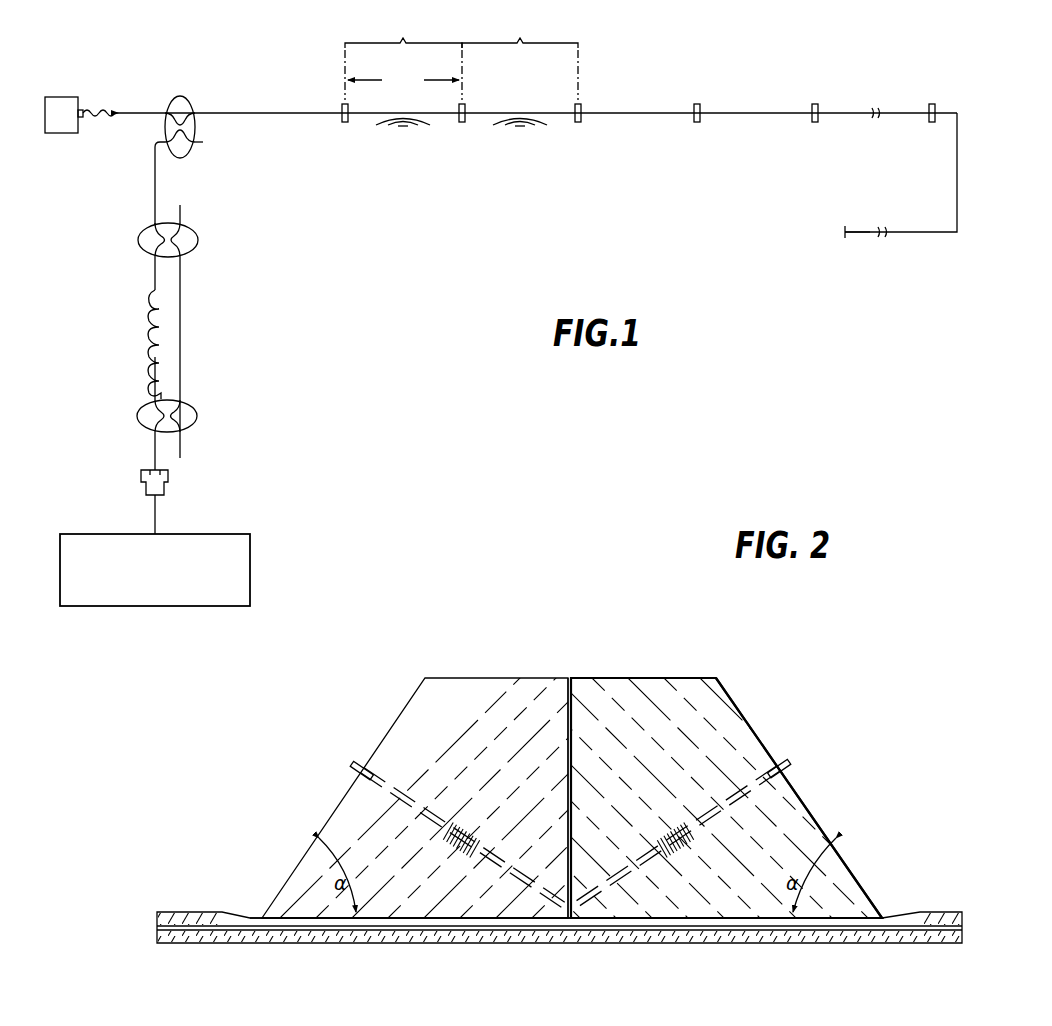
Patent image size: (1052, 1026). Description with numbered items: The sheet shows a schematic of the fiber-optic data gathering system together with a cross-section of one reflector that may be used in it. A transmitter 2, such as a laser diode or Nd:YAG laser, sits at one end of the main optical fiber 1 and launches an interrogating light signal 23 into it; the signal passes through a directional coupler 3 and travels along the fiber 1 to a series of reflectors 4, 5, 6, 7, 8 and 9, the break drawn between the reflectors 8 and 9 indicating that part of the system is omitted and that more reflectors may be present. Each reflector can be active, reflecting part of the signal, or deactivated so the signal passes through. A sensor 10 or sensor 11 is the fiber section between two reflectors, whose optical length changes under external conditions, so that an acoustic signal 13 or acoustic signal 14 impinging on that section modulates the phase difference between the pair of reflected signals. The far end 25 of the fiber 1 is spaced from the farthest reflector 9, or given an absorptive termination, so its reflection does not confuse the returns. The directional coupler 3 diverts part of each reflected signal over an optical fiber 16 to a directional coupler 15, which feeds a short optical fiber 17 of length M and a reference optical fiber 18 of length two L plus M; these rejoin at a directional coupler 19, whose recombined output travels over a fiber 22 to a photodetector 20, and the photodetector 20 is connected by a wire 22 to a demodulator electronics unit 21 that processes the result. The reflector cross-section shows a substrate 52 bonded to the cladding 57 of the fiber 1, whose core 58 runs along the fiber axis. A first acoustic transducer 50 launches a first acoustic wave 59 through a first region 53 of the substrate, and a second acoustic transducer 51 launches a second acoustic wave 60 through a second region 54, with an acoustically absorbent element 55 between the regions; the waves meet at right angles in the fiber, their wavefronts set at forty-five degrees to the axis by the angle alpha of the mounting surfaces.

In FIG. 1, the main optical fiber 1 is at (246, 110).
In FIG. 2, the main optical fiber 1 is at (906, 912).
In FIG. 1, the transmitter 2 is at (60, 135).
In FIG. 1, the directional coupler 3 is at (178, 96).
In FIG. 1, the reflector 4 is at (343, 102).
In FIG. 1, the reflector 5 is at (457, 123).
In FIG. 1, the reflector 6 is at (583, 122).
In FIG. 1, the reflector 7 is at (702, 122).
In FIG. 1, the reflector 8 is at (820, 122).
In FIG. 1, the reflector 9 is at (928, 122).
In FIG. 1, the sensor 10 is at (403, 58).
In FIG. 1, the sensor 11 is at (520, 58).
In FIG. 1, the acoustic signal 13 is at (376, 125).
In FIG. 1, the acoustic signal 14 is at (493, 125).
In FIG. 1, the directional coupler 15 is at (198, 240).
In FIG. 1, the optical fiber 16 is at (155, 180).
In FIG. 1, the short optical fiber 17 is at (180, 333).
In FIG. 1, the reference optical fiber 18 is at (155, 378).
In FIG. 1, the directional coupler 19 is at (197, 416).
In FIG. 1, the photodetector 20 is at (168, 488).
In FIG. 1, the demodulator electronics unit 21 is at (250, 555).
In FIG. 1, the optical fiber / wire 22 is at (155, 450).
In FIG. 1, the interrogating light signal 23 is at (100, 108).
In FIG. 1, the end of fiber 25 is at (850, 236).
In FIG. 2, the first acoustic transducer 50 is at (787, 764).
In FIG. 2, the second acoustic transducer 51 is at (360, 764).
In FIG. 2, the substrate 52 is at (662, 676).
In FIG. 2, the first region 53 is at (718, 710).
In FIG. 2, the second region 54 is at (430, 686).
In FIG. 2, the acoustically absorbent element 55 is at (566, 695).
In FIG. 2, the cladding 57 is at (559, 921).
In FIG. 2, the core 58 is at (895, 944).
In FIG. 2, the first acoustic wave 59 is at (672, 830).
In FIG. 2, the second acoustic wave 60 is at (466, 830).